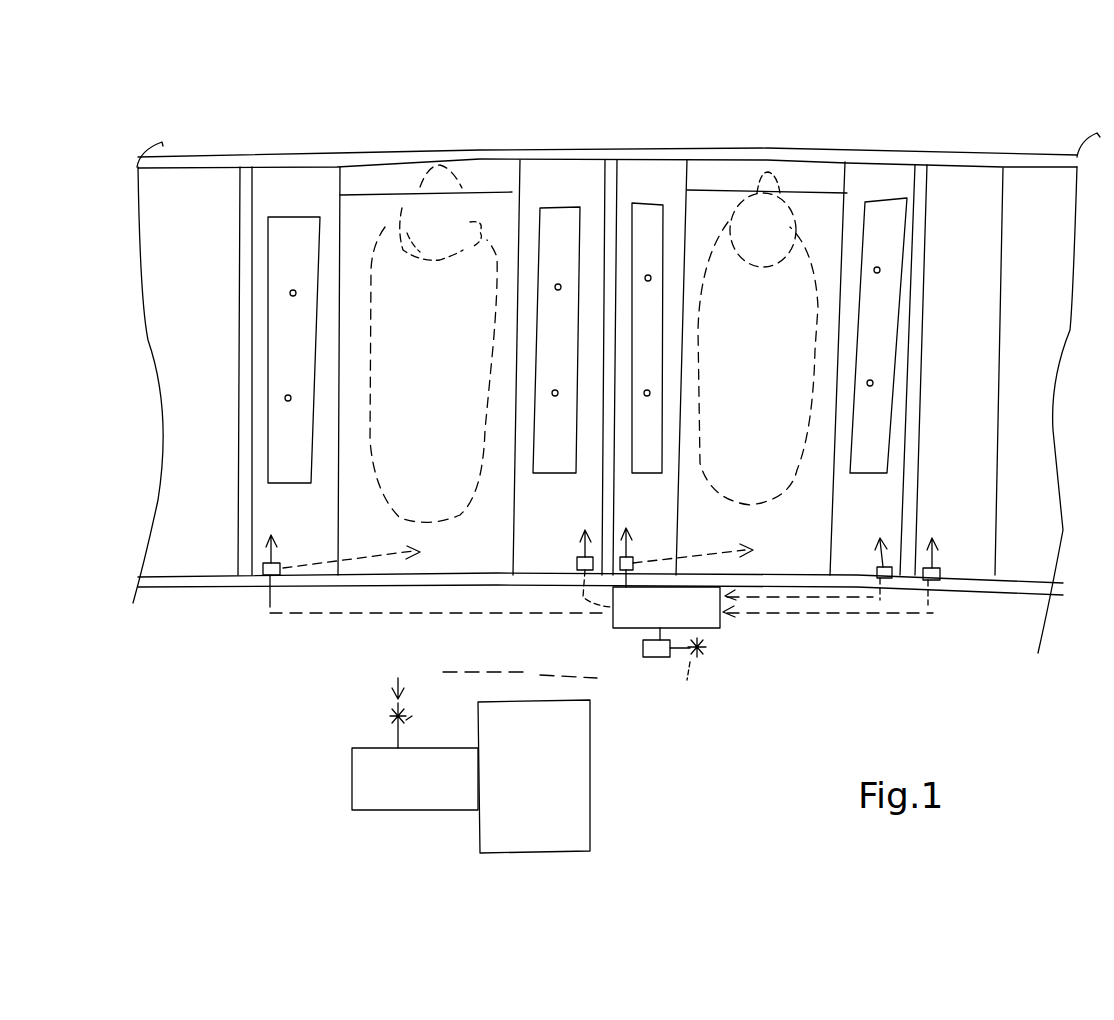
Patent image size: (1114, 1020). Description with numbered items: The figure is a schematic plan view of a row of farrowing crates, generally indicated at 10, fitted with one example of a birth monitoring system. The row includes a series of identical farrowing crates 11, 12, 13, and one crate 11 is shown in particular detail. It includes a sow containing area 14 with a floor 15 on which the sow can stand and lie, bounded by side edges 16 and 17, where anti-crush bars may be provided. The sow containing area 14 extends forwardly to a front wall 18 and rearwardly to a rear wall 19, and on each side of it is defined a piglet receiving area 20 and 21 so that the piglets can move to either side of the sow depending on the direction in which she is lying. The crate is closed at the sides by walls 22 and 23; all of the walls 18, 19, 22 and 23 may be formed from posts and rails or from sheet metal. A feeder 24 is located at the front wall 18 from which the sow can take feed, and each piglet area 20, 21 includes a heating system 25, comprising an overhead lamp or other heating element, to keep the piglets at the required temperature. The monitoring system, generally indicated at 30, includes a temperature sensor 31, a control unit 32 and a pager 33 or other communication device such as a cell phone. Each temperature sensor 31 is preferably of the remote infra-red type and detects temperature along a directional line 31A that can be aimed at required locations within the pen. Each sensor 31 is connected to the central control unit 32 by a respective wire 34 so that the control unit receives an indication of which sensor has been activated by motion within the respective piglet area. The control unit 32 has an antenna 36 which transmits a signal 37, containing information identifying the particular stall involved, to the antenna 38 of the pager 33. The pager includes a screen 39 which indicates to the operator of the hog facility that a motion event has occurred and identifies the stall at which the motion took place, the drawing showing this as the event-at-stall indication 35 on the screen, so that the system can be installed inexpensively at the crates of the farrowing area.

The row of farrowing crates 10 is at (818, 125).
The farrowing crate 11 is at (468, 127).
The farrowing crate 12 is at (737, 135).
The farrowing crate 13 is at (1009, 132).
The sow containing area 14 is at (418, 224).
The floor 15 is at (413, 380).
The side edge 16 is at (343, 288).
The side edge 17 is at (520, 300).
The front wall 18 is at (505, 150).
The rear wall 19 is at (310, 578).
The piglet receiving area 20 is at (322, 445).
The piglet receiving area 21 is at (525, 448).
The side wall 22 is at (252, 203).
The side wall 23 is at (613, 187).
The feeder 24 is at (362, 178).
The heating system 25 is at (270, 270).
The monitoring system 30 is at (731, 687).
The temperature sensor 31 is at (262, 578).
The directional line 31A is at (267, 552).
The control unit 32 is at (667, 682).
The pager 33 is at (397, 810).
The wire 34 is at (477, 613).
The event message 35 is at (533, 779).
The antenna 36 is at (660, 658).
The signal 37 is at (440, 673).
The antenna 38 is at (397, 733).
The screen 39 is at (578, 773).